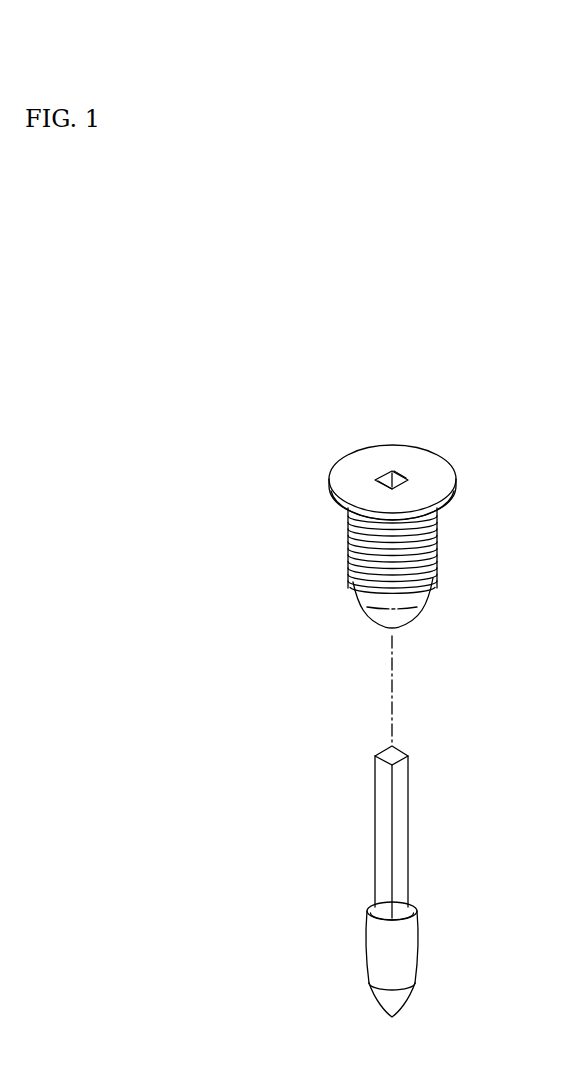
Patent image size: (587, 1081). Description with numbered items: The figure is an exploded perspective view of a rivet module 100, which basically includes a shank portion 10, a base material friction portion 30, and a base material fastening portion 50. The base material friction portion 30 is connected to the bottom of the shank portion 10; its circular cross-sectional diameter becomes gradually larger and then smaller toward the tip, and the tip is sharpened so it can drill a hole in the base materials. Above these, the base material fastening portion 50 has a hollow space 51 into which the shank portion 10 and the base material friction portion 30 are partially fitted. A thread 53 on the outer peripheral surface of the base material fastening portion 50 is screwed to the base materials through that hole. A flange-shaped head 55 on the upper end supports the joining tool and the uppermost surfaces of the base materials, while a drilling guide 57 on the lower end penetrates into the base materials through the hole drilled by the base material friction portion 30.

The rivet module 100 is at (416, 341).
The base material fastening portion 50 is at (401, 512).
The hollow space 51 is at (394, 478).
The thread 53 is at (347, 543).
The flange-shaped head 55 is at (438, 470).
The drilling guide 57 is at (415, 610).
The shank portion 10 is at (410, 819).
The base material friction portion 30 is at (418, 939).